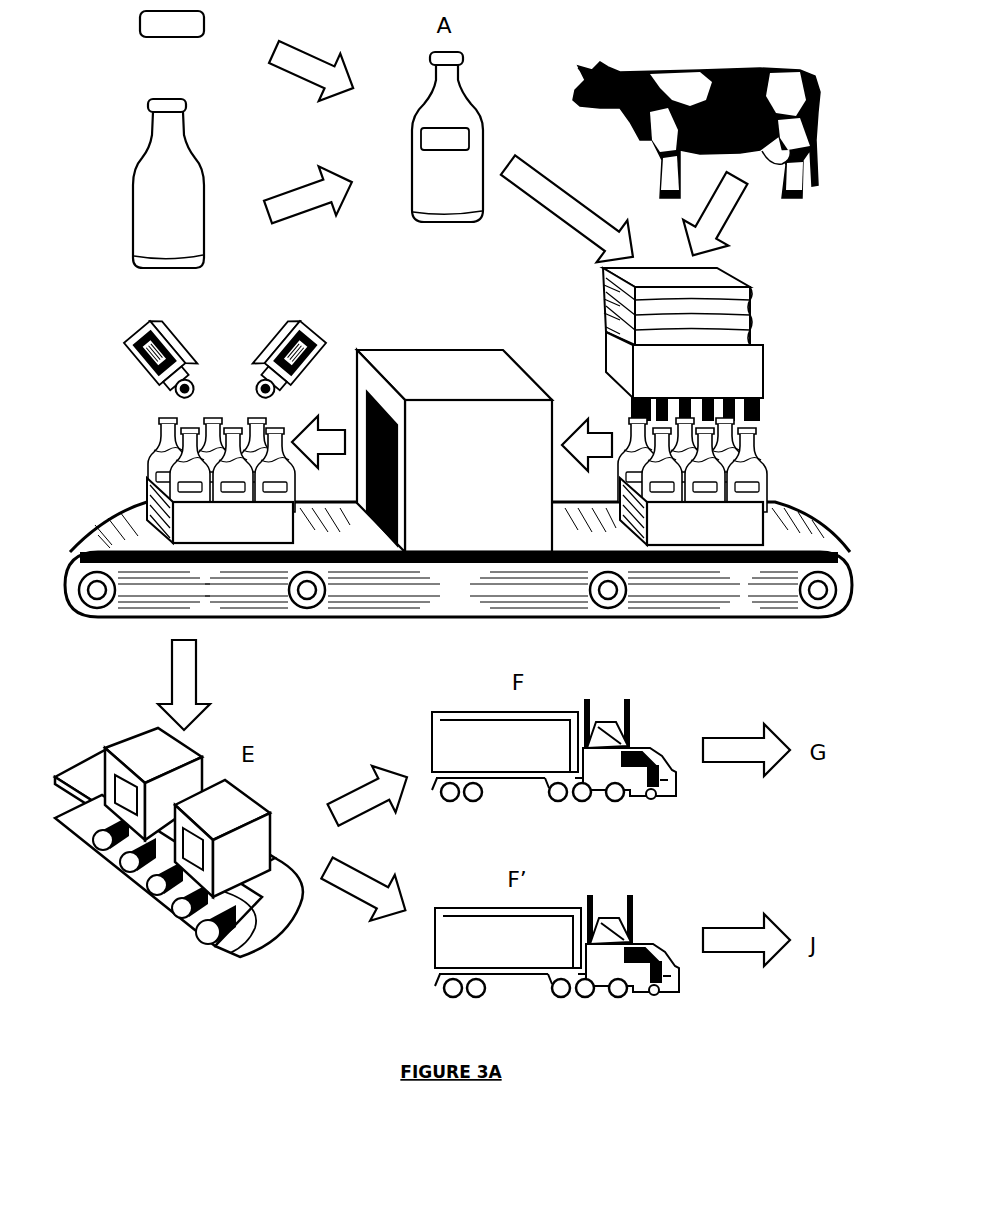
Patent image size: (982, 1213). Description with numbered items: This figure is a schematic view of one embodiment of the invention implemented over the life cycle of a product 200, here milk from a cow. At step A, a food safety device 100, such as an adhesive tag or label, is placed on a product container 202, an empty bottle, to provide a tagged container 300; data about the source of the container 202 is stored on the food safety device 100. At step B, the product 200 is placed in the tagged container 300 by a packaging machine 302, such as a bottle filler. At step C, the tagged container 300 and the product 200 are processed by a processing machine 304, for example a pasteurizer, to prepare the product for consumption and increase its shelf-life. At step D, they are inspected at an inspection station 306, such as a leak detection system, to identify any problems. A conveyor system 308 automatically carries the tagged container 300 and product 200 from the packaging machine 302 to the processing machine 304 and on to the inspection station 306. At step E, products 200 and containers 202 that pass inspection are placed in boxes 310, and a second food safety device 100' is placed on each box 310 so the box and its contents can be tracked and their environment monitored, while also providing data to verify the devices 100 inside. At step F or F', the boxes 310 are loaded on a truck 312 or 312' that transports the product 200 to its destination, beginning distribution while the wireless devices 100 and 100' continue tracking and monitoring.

The food safety device 100 is at (135, 31).
The second food safety device 100' is at (201, 874).
The product 200 is at (737, 73).
The product container 202 is at (133, 195).
The tagged container 300 is at (443, 224).
The packaging machine 302 is at (683, 344).
The processing machine 304 is at (454, 451).
The inspection station 306 is at (225, 360).
The conveyor system 308 is at (100, 908).
The box 310 is at (143, 748).
The truck 312 is at (554, 750).
The truck 312' is at (557, 946).